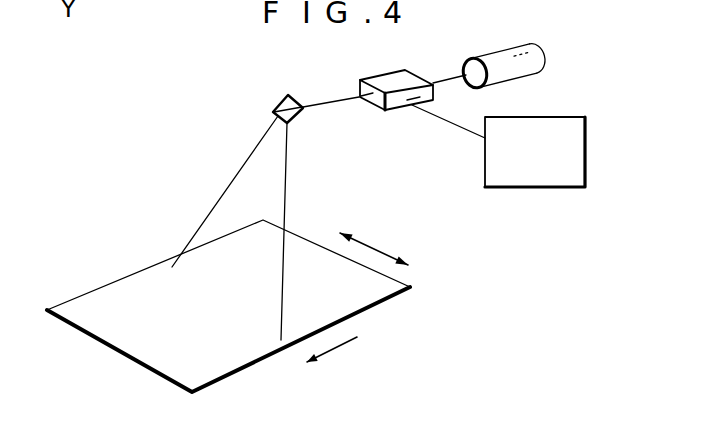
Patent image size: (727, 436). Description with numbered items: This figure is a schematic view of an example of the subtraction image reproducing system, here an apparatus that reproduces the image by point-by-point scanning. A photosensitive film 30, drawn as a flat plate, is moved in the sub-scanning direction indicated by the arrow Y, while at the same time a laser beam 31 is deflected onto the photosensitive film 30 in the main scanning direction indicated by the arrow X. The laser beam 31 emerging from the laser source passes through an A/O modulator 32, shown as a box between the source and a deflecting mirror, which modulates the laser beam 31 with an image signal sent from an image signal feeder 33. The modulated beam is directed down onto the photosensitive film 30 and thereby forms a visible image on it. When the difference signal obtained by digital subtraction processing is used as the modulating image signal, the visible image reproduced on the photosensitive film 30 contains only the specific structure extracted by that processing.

The photosensitive film 30 is at (376, 288).
The laser beam 31 is at (288, 183).
The A/O modulator 32 is at (395, 110).
The image signal feeder 33 is at (540, 188).